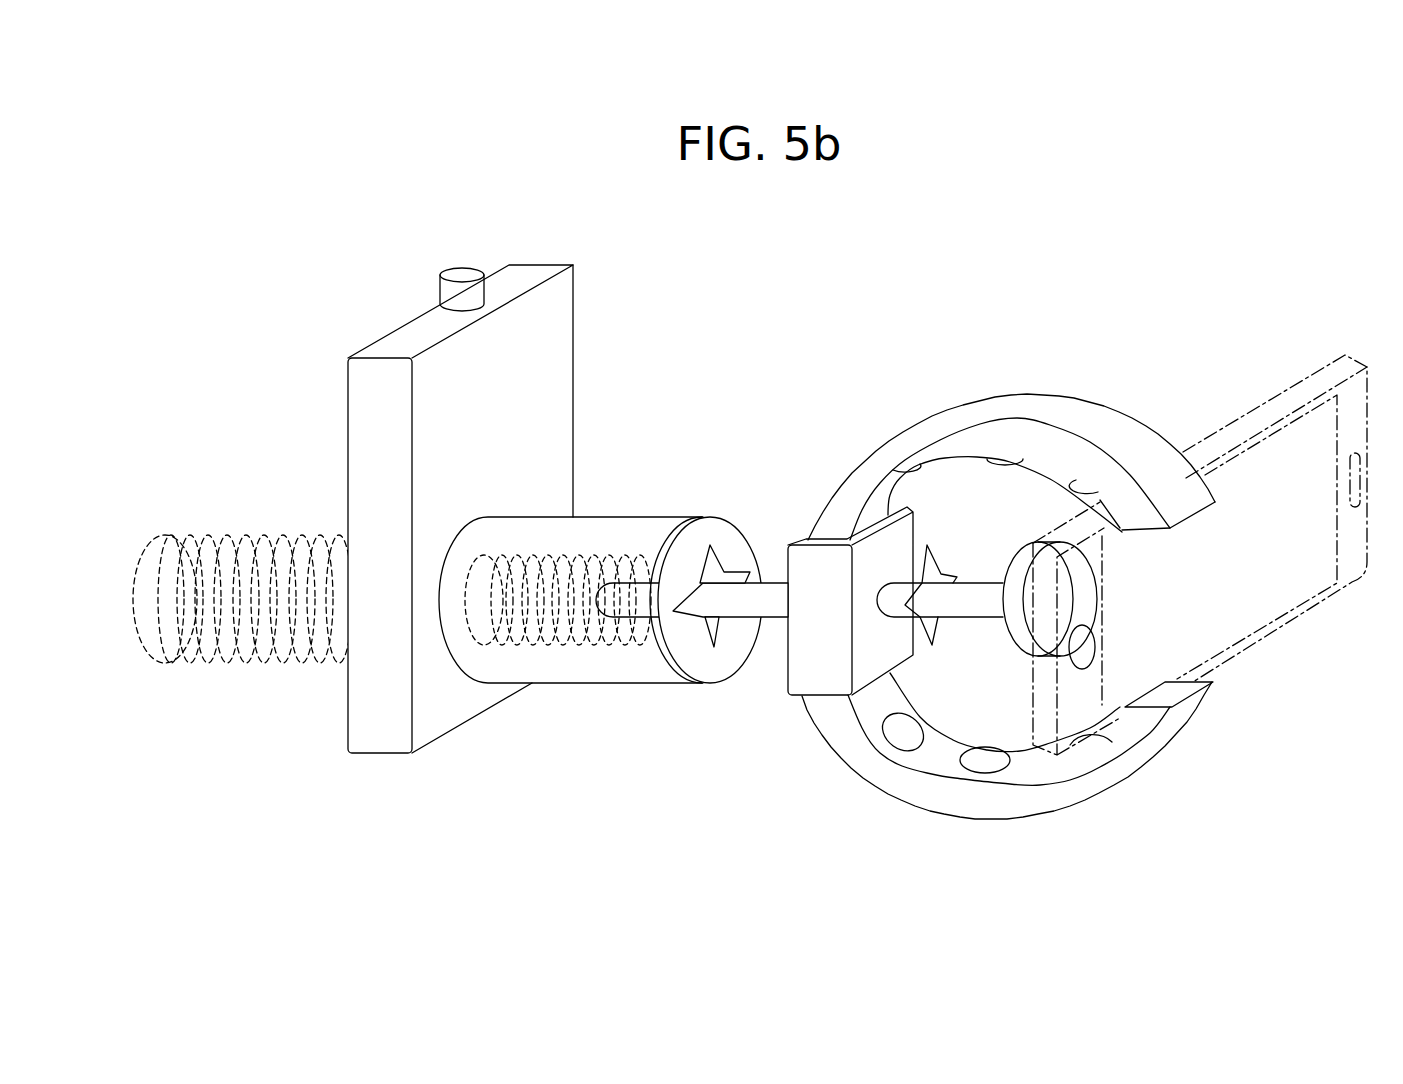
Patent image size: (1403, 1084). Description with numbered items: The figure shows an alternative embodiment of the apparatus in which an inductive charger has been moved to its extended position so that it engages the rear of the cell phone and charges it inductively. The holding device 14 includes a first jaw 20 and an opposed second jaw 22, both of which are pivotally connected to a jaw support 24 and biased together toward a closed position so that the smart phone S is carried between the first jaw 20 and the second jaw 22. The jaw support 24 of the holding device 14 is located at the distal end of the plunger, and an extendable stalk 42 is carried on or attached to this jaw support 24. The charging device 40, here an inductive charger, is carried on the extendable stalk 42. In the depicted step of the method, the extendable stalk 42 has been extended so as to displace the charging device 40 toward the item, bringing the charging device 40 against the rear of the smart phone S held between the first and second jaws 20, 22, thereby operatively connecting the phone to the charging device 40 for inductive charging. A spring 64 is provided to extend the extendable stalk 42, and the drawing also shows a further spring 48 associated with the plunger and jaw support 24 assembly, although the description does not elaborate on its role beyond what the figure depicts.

The holding device 14 is at (1008, 579).
The first jaw 20 is at (1005, 402).
The second jaw 22 is at (1008, 820).
The jaw support 24 is at (543, 375).
The charging device 40 is at (1077, 597).
The extendable stalk 42 is at (776, 598).
The outer spring 48 is at (240, 662).
The spring 64 is at (520, 562).
The smart phone S is at (1286, 396).